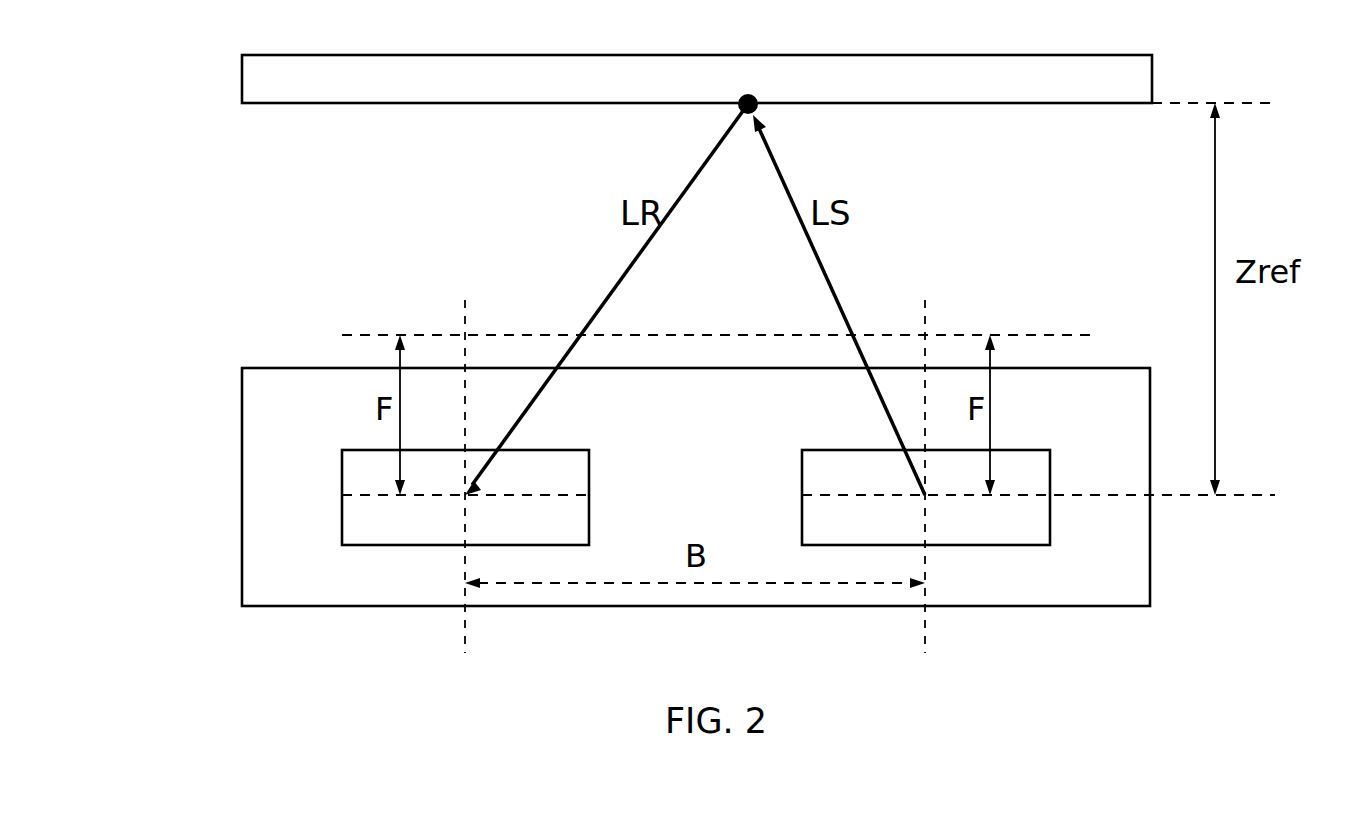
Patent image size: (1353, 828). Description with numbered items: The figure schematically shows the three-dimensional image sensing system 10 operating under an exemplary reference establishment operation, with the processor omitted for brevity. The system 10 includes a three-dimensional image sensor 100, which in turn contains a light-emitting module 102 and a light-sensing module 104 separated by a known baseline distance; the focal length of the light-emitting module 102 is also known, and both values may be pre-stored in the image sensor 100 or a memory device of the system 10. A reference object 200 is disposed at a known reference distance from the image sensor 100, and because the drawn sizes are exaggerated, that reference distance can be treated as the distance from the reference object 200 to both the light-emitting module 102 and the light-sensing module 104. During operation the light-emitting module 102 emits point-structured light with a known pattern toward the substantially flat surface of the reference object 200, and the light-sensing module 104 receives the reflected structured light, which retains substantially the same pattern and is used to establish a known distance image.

The 3D image sensing system 10 is at (218, 306).
The 3D image sensor 100 is at (1103, 368).
The light-emitting module 102 is at (1050, 470).
The light-sensing module 104 is at (589, 470).
The reference object 200 is at (1147, 55).